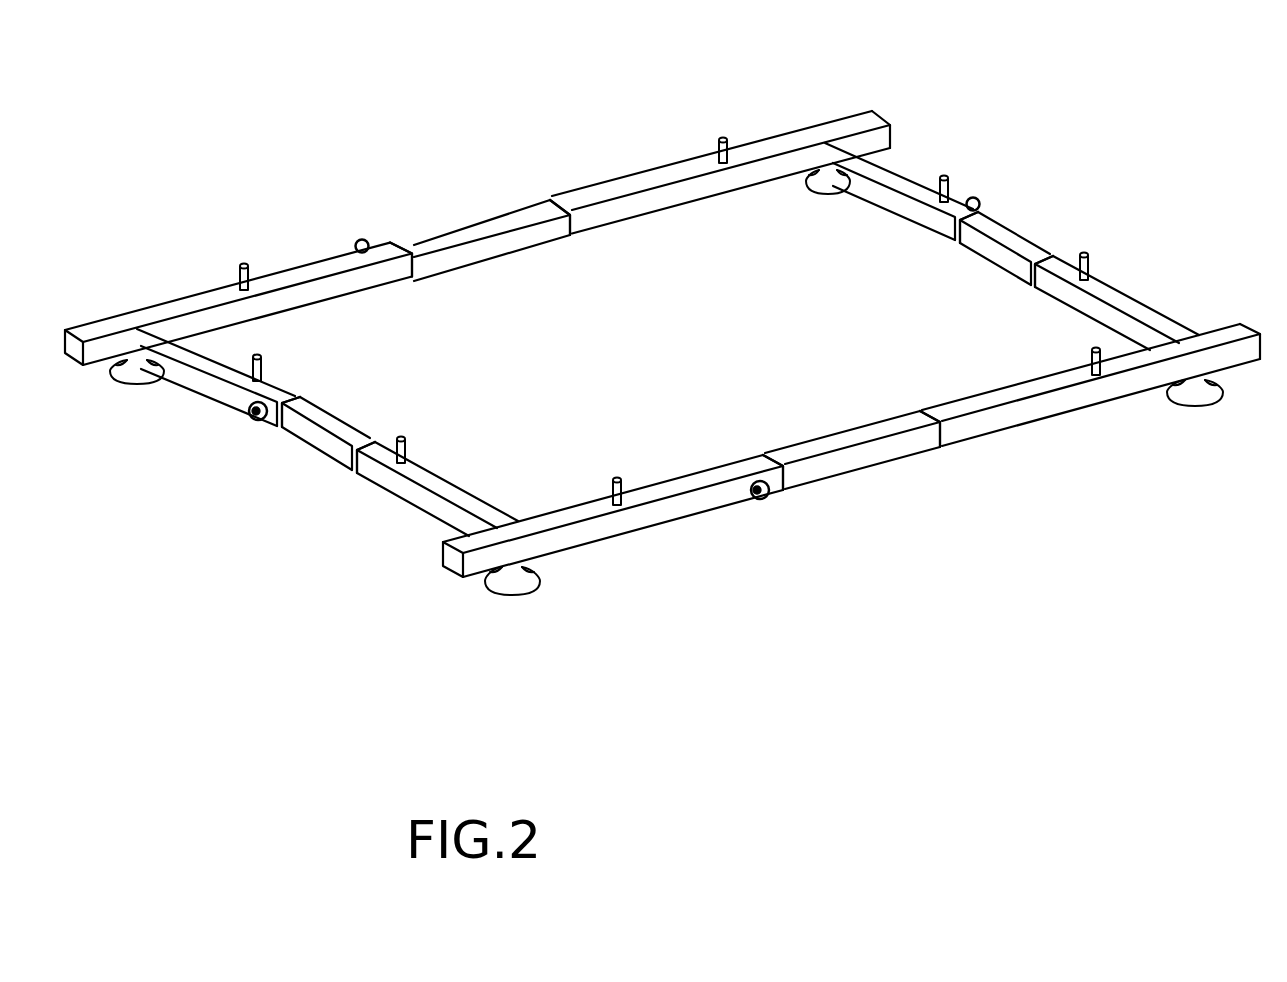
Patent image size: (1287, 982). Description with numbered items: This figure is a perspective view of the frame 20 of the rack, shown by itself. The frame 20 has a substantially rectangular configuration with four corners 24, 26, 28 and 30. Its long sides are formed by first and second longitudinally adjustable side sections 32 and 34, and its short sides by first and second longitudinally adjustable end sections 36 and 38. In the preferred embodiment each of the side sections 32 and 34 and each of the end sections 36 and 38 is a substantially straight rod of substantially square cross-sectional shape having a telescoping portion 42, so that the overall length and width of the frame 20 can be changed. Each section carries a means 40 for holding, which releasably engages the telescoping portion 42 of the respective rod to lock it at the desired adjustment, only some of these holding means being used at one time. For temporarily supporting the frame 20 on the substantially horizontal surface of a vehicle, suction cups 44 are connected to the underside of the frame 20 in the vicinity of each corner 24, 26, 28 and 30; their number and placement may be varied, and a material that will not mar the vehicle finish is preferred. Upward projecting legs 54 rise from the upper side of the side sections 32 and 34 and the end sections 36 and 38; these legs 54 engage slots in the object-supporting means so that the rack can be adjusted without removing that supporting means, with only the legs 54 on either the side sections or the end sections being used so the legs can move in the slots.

The frame 20 is at (578, 168).
The corner 24 is at (140, 316).
The corner 26 is at (858, 114).
The corner 28 is at (1213, 328).
The corner 30 is at (510, 518).
The first longitudinally adjustable side section 32 is at (325, 262).
The second longitudinally adjustable side section 34 is at (665, 522).
The first longitudinally adjustable end section 36 is at (1138, 292).
The second longitudinally adjustable end section 38 is at (408, 506).
The means for holding 40 is at (368, 240).
The telescoping portion 42 is at (417, 282).
The suction cup 44 is at (147, 380).
The upward projecting leg 54 is at (242, 262).